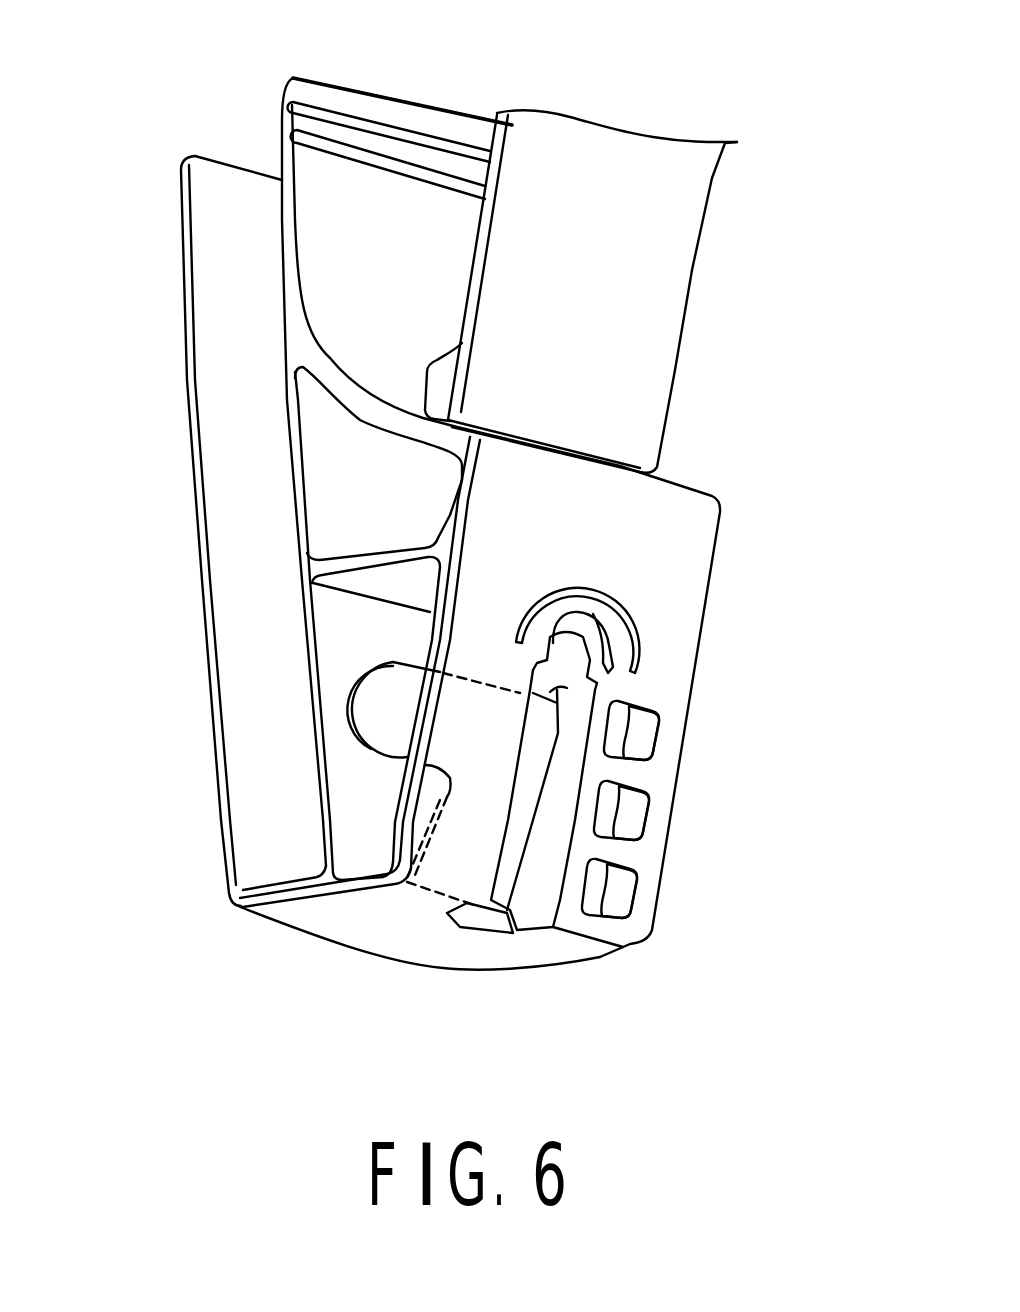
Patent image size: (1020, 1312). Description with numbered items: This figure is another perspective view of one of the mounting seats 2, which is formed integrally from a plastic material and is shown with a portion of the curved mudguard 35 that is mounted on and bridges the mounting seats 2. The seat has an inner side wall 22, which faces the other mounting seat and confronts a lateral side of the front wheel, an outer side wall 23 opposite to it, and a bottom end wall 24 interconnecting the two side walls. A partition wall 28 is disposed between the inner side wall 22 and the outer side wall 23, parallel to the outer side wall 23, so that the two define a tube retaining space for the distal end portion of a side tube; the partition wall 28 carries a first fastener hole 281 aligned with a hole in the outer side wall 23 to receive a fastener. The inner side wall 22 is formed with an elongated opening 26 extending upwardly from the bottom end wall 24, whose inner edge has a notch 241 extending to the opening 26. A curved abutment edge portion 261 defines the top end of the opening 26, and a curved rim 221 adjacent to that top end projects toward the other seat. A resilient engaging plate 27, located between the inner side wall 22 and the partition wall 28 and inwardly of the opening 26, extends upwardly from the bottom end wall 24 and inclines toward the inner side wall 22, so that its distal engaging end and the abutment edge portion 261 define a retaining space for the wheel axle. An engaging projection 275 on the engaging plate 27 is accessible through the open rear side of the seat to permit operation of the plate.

The mounting seat 2 is at (727, 485).
The inner side wall 22 is at (677, 637).
The curved rim 221 is at (627, 620).
The outer side wall 23 is at (210, 643).
The bottom end wall 24 is at (430, 943).
The notch 241 is at (487, 930).
The elongated opening 26 is at (540, 907).
The curved abutment edge portion 261 is at (590, 609).
The resilient engaging plate 27 is at (538, 758).
The engaging projection 275 is at (387, 717).
The partition wall 28 is at (305, 665).
The first fastener hole 281 is at (217, 197).
The curved mudguard 35 is at (620, 264).